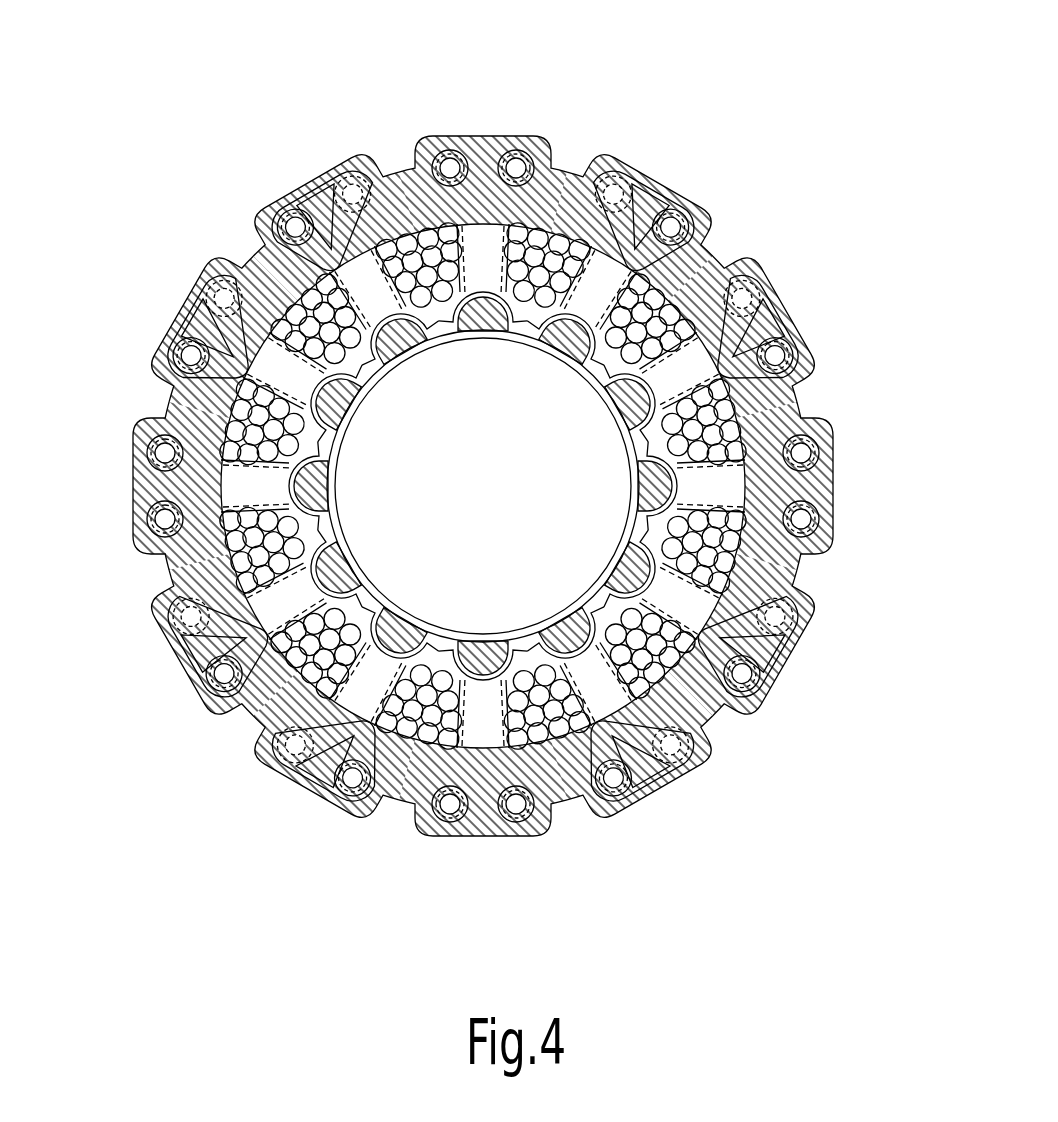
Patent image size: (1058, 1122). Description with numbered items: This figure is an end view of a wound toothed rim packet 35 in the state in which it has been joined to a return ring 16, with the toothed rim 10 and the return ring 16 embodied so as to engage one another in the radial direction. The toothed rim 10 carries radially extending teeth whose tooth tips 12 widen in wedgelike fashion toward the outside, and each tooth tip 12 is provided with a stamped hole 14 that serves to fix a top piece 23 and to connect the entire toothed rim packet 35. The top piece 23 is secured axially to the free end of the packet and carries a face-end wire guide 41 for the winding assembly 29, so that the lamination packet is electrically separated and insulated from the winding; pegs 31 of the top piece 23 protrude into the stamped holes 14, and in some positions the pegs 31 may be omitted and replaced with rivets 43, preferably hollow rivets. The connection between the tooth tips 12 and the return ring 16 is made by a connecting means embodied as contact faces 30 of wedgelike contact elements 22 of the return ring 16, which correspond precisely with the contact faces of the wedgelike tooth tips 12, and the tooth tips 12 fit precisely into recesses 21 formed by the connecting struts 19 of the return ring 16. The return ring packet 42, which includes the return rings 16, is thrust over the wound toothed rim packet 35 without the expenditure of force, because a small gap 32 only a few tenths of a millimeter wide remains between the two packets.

The toothed rim 10 is at (200, 357).
The tooth tip 12 is at (781, 696).
The stamped hole 14 is at (513, 150).
The return ring 16 is at (400, 168).
The connecting strut 19 is at (669, 793).
The recess 21 is at (652, 770).
The wedgelike contact element 22 is at (660, 787).
The top piece 23 is at (323, 210).
The winding assembly 29 is at (541, 250).
The contact face 30 is at (803, 347).
The peg 31 is at (776, 360).
The gap 32 is at (824, 528).
The toothed rim packet 35 is at (310, 716).
The face-end wire guide 41 is at (695, 608).
The return ring packet 42 is at (176, 666).
The rivet 43 is at (452, 836).